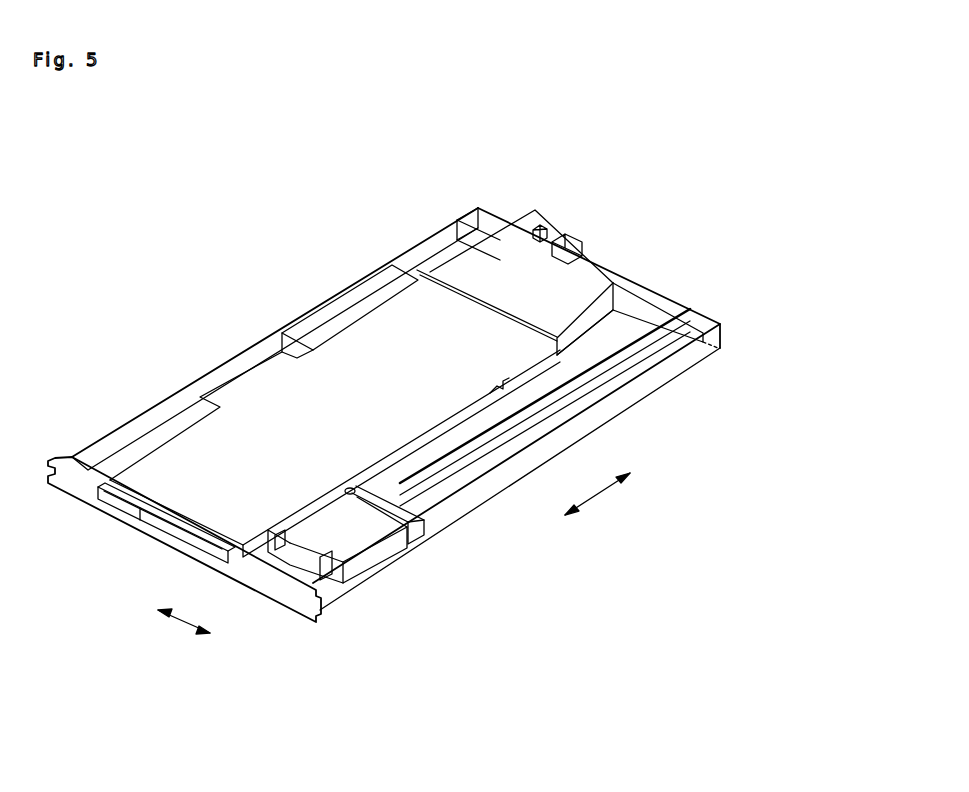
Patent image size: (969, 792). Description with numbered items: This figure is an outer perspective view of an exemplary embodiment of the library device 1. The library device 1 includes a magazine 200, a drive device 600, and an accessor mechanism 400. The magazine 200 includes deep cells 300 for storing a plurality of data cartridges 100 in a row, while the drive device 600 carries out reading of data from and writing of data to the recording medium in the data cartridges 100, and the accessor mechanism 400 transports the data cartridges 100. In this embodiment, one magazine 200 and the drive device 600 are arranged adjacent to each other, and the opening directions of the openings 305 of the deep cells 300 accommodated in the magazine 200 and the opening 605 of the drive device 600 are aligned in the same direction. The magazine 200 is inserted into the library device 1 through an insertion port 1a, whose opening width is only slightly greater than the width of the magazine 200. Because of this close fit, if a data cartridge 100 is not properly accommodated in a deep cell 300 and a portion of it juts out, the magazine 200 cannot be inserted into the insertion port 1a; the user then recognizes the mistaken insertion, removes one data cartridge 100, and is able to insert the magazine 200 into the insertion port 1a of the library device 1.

The library device 1 is at (650, 567).
The insertion port 1a is at (130, 522).
The data cartridge 100 is at (460, 413).
The magazine 200 is at (287, 406).
The deep cell 300 is at (600, 387).
The opening of deep cell 305 is at (510, 385).
The accessor mechanism 400 is at (352, 562).
The drive device 600 is at (492, 257).
The opening of drive device 605 is at (607, 298).